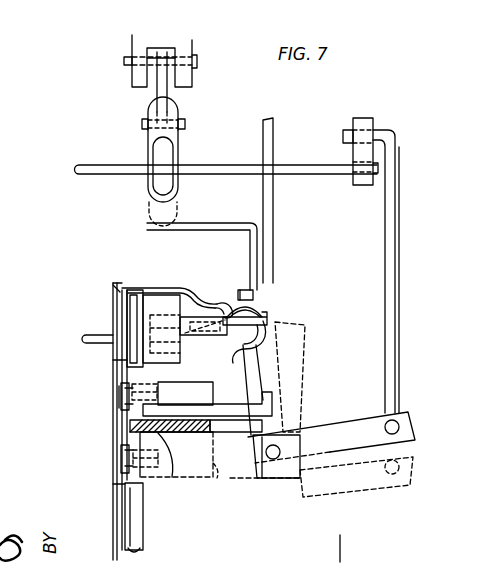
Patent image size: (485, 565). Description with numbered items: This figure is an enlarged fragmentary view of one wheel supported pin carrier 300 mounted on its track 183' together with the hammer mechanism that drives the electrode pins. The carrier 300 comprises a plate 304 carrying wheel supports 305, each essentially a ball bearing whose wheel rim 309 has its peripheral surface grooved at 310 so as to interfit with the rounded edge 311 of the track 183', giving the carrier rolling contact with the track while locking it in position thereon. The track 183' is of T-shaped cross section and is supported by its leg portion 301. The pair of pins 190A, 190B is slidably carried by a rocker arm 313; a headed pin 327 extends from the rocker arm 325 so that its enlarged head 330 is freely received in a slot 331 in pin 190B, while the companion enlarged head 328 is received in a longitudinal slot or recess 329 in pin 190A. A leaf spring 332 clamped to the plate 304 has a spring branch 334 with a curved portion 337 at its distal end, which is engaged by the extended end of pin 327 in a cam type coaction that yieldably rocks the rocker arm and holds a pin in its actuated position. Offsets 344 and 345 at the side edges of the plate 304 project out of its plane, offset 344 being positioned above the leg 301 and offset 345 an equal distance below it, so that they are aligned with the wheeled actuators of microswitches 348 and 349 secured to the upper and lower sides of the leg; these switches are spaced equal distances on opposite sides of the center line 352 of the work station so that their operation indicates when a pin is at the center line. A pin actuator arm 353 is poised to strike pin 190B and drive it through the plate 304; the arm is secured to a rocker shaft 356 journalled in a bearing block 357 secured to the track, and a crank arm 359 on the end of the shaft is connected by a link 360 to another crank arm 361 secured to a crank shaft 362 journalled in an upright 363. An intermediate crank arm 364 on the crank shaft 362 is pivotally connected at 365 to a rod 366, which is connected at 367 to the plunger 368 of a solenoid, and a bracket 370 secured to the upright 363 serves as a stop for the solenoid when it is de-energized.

The plunger 368 is at (192, 50).
The connection 367 is at (150, 62).
The rod 366 is at (168, 98).
The pivotal connection 365 is at (178, 123).
The intermediate crank arm 364 is at (178, 150).
The bracket 370 is at (190, 224).
The upright 363 is at (273, 215).
The crank shaft 362 is at (285, 162).
The crank arm 361 is at (372, 126).
The link 360 is at (400, 321).
The pin carrier 300 is at (101, 284).
The leaf spring 332 is at (112, 286).
The wheel support 305 is at (120, 287).
The groove 310 is at (137, 290).
The spring branch 334 is at (160, 290).
The curved portion 337 is at (195, 300).
The headed pin 327 is at (240, 290).
The rocker arm 325 is at (253, 300).
The enlarged head 330 is at (258, 306).
The pin 190B is at (268, 318).
The slot 331 is at (278, 334).
The enlarged head 328 is at (293, 361).
The pin actuator arm 353 is at (280, 408).
The crank arm 359 is at (410, 426).
The pin 190A is at (88, 335).
The rounded edge 311 is at (120, 362).
The microswitch 348 is at (121, 374).
The offset 344 is at (117, 390).
The track 183' is at (135, 425).
The offset 345 is at (117, 462).
The plate 304 is at (118, 490).
The leg portion 301 is at (167, 477).
The wheel rim 309 is at (145, 523).
The microswitch 349 is at (213, 471).
The bearing block 357 is at (236, 478).
The rocker shaft 356 is at (282, 455).
The center line 352 is at (340, 555).
The longitudinal slot 329 is at (213, 337).
The rocker arm 313 is at (172, 394).